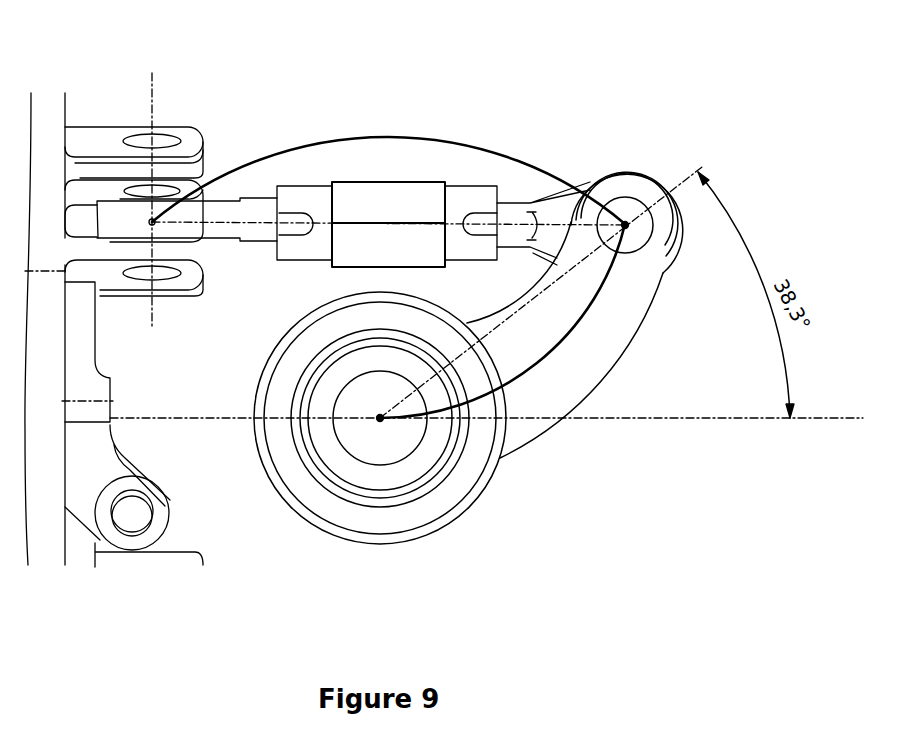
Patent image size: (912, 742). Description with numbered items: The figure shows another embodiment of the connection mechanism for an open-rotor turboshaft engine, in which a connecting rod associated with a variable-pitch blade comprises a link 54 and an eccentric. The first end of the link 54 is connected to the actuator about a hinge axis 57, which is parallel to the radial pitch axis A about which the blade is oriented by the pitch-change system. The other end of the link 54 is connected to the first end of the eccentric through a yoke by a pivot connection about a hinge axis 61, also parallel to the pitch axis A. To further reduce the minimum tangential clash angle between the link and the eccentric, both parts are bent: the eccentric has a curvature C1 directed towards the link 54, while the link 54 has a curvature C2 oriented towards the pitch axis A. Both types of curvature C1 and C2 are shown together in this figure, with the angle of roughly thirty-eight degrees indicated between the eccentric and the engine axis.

The link 54 is at (355, 182).
The hinge axis 57 is at (158, 86).
The hinge axis 61 is at (626, 223).
The pitch axis A is at (380, 420).
The curvature of the eccentric C1 is at (537, 367).
The curvature of the link C2 is at (278, 155).